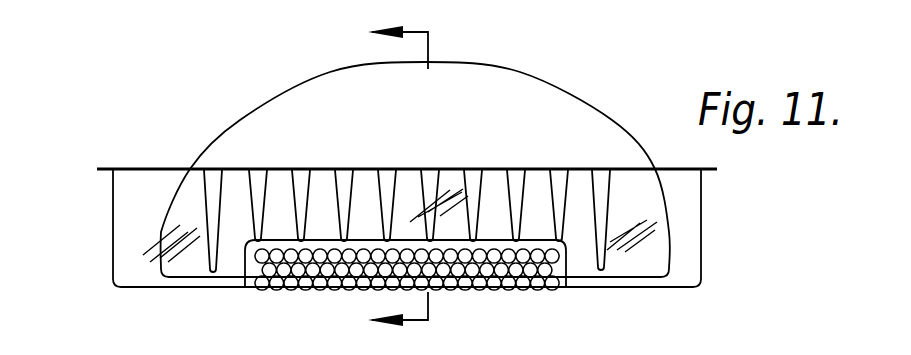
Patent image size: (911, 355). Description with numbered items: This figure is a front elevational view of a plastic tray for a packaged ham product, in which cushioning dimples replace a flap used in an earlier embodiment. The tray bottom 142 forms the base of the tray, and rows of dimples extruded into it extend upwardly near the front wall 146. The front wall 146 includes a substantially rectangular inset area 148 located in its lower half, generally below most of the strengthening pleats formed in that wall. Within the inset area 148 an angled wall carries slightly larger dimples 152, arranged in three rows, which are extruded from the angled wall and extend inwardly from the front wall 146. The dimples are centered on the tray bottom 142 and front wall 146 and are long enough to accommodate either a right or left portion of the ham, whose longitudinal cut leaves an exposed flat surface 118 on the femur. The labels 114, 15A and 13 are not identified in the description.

The transparent dome cover 114 is at (523, 97).
The front wall 146 is at (127, 203).
The tapered teeth 15A is at (600, 196).
The inset area 148 is at (257, 278).
The flat surface 118 is at (477, 258).
The dimples 152 is at (543, 263).
The tray bottom 142 is at (673, 285).
The section line 13 is at (369, 179).